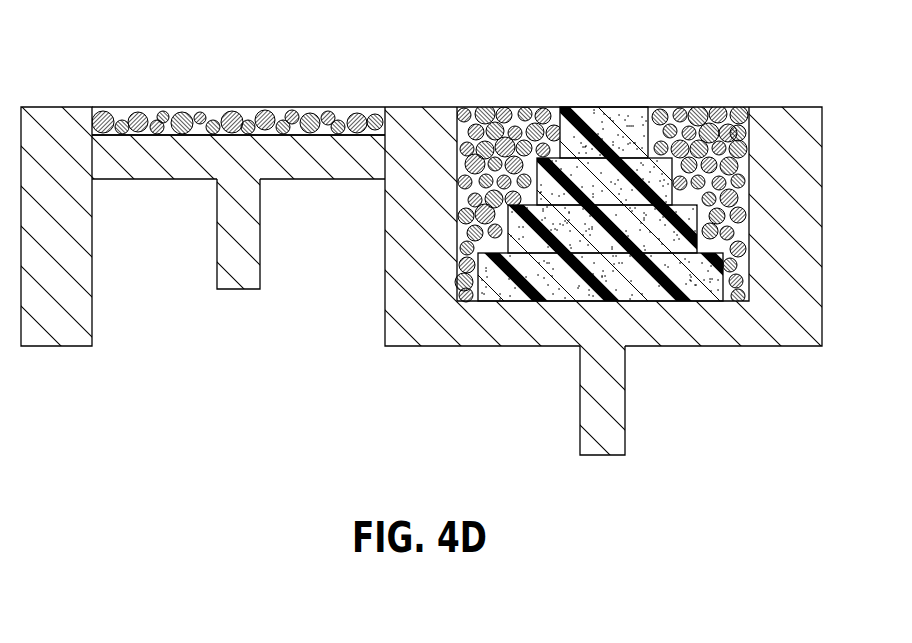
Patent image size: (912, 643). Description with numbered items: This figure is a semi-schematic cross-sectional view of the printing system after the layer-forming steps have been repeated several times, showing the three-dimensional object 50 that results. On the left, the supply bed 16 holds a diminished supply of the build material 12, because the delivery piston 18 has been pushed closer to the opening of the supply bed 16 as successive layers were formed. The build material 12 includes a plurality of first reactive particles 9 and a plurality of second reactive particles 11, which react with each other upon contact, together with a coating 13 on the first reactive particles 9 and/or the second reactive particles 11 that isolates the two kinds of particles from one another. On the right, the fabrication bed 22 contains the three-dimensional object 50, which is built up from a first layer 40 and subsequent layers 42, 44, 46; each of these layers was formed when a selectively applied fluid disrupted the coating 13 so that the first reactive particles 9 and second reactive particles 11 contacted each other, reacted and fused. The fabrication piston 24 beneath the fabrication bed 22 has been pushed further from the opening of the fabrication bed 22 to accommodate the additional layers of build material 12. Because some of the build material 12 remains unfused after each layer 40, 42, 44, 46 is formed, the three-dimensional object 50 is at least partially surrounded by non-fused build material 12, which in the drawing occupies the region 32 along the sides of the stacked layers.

The first reactive particles 9 is at (327, 112).
The second reactive particles 11 is at (167, 140).
The build material 12 is at (248, 108).
The coating 13 is at (182, 137).
The supply bed 16 is at (113, 112).
The delivery piston 18 is at (234, 262).
The fabrication bed 22 is at (457, 210).
The fabrication piston 24 is at (603, 407).
The particle fill region 32 is at (476, 107).
The layer of the 3D object 40 is at (750, 268).
The layer of the 3D object 42 is at (750, 228).
The layer of the 3D object 44 is at (750, 187).
The layer of the 3D object 46 is at (750, 147).
The 3D object 50 is at (587, 156).